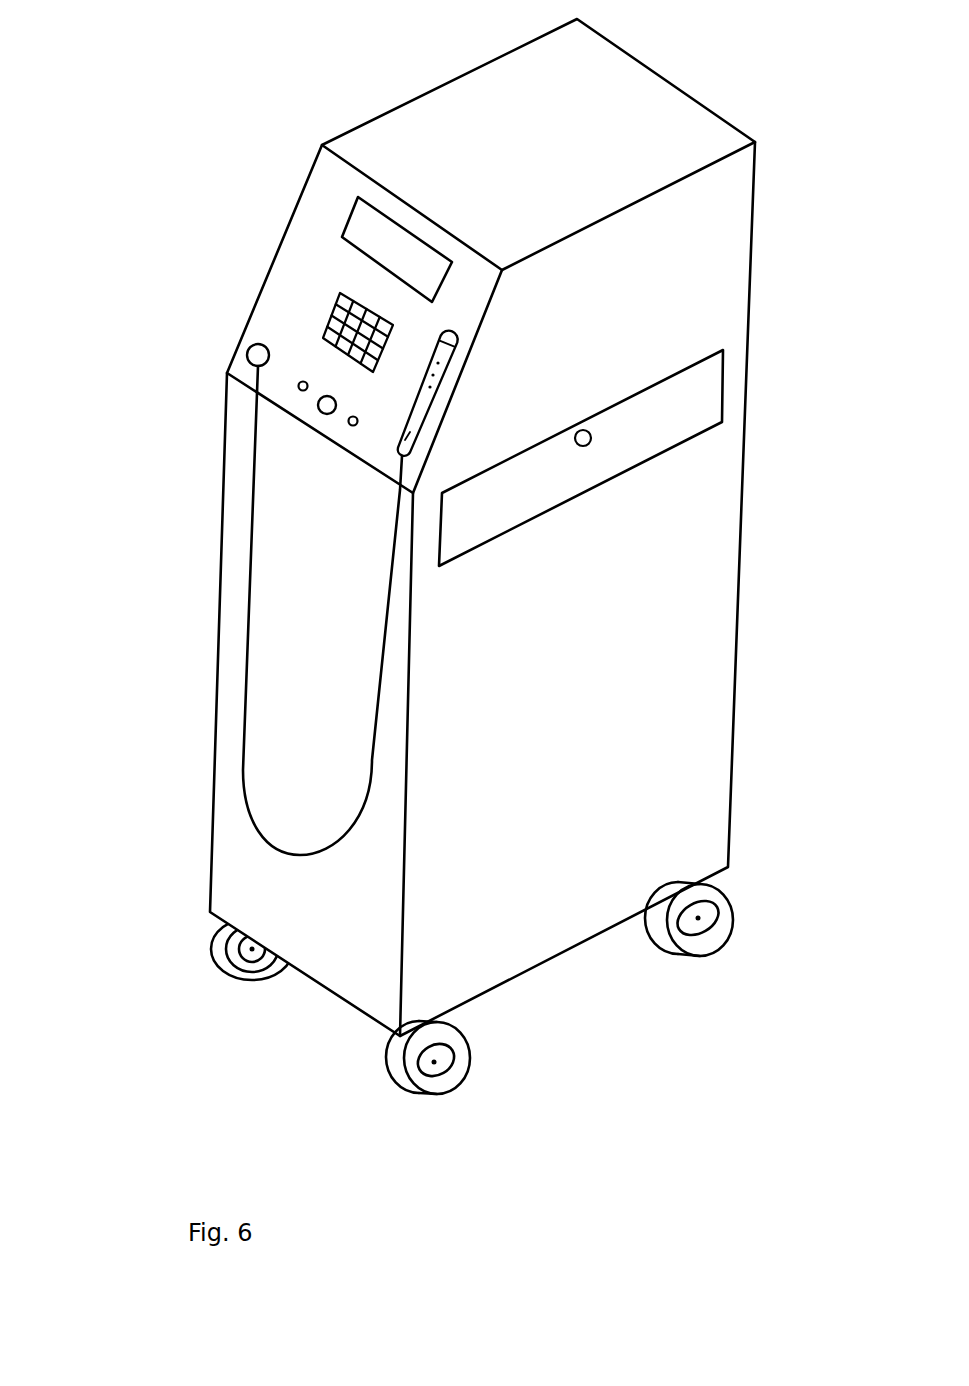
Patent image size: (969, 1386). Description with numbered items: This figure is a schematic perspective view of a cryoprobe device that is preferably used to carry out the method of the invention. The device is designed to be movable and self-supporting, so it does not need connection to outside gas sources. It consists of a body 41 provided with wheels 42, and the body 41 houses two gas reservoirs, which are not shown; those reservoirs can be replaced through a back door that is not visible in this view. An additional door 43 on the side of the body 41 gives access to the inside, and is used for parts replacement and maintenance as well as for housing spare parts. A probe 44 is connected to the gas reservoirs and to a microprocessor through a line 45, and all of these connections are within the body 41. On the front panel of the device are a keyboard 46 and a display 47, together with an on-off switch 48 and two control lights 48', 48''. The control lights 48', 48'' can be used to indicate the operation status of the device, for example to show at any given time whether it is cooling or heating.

The body 41 is at (708, 660).
The wheels 42 is at (268, 980).
The door 43 is at (687, 412).
The probe 44 is at (420, 437).
The line 45 is at (247, 630).
The keyboard 46 is at (333, 303).
The display 47 is at (378, 238).
The on-off switch 48 is at (184, 388).
The control light 48' is at (221, 336).
The control light 48'' is at (239, 468).